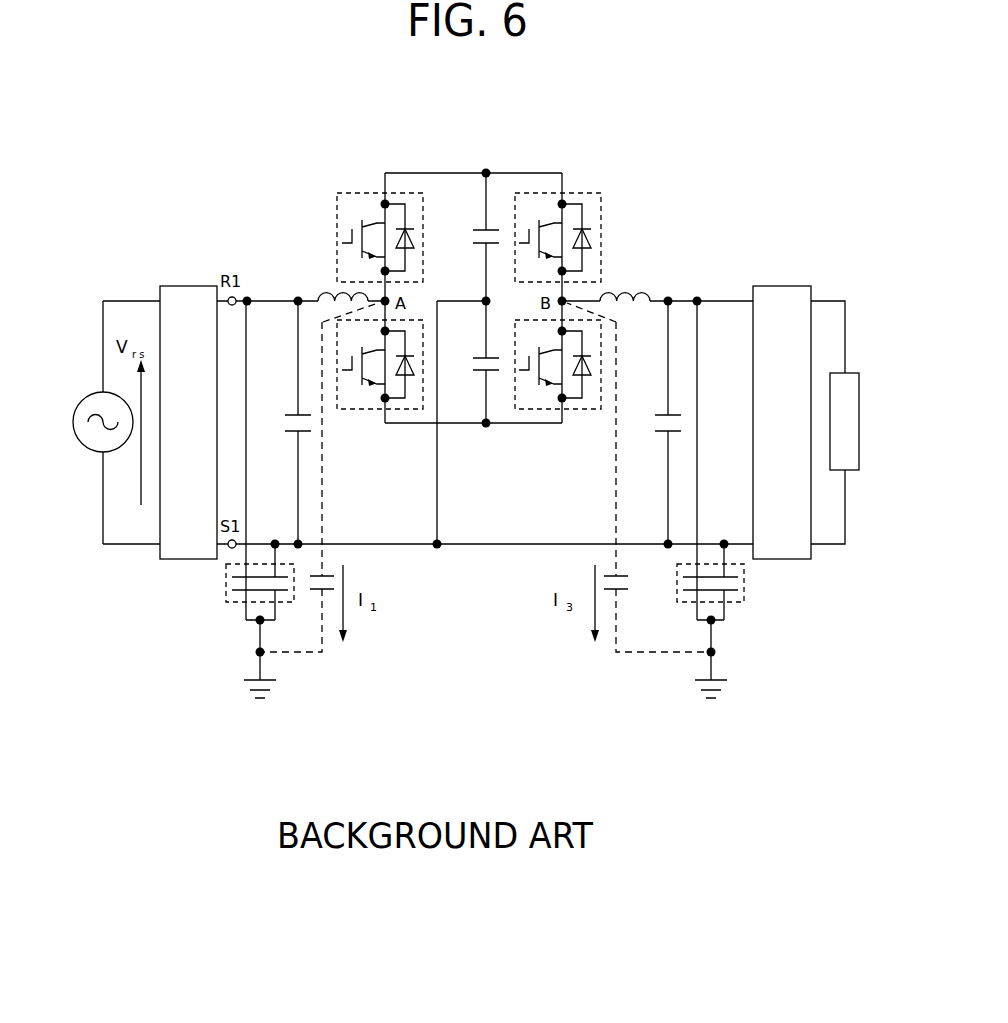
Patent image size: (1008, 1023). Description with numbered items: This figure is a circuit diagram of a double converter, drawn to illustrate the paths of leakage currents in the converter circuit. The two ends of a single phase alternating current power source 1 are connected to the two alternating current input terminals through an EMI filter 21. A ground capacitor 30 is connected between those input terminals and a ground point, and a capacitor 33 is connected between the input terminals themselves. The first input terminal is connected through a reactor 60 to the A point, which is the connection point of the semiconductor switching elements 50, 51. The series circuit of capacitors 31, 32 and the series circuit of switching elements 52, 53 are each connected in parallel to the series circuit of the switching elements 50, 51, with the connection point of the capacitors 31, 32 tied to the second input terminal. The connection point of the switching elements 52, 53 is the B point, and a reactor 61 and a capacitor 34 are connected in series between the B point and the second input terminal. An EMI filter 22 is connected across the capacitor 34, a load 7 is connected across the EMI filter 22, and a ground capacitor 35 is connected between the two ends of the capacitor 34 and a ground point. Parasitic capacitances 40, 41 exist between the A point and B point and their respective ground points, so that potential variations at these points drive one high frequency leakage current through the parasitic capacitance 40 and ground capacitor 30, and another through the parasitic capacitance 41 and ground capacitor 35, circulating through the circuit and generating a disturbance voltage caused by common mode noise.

The single phase alternating current power source 1 is at (93, 442).
The load 7 is at (853, 380).
The EMI filter 21 is at (186, 293).
The EMI filter 22 is at (778, 290).
The ground capacitor 30 is at (226, 600).
The capacitor 31 is at (480, 228).
The capacitor 32 is at (470, 362).
The capacitor 33 is at (278, 425).
The capacitor 34 is at (656, 440).
The ground capacitor 35 is at (745, 595).
The parasitic capacitance 40 is at (320, 592).
The parasitic capacitance 41 is at (620, 592).
The semiconductor switching element 50 is at (353, 192).
The semiconductor switching element 51 is at (352, 412).
The switching element 52 is at (593, 192).
The switching element 53 is at (585, 412).
The reactor 60 is at (318, 290).
The reactor 61 is at (628, 285).